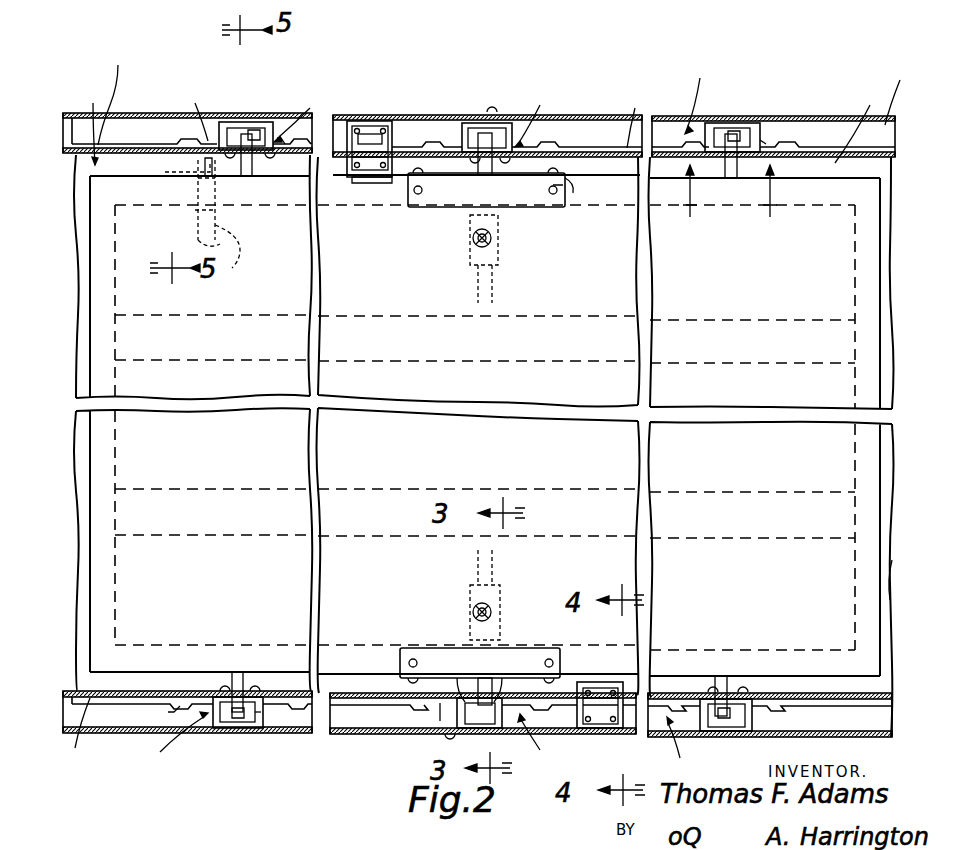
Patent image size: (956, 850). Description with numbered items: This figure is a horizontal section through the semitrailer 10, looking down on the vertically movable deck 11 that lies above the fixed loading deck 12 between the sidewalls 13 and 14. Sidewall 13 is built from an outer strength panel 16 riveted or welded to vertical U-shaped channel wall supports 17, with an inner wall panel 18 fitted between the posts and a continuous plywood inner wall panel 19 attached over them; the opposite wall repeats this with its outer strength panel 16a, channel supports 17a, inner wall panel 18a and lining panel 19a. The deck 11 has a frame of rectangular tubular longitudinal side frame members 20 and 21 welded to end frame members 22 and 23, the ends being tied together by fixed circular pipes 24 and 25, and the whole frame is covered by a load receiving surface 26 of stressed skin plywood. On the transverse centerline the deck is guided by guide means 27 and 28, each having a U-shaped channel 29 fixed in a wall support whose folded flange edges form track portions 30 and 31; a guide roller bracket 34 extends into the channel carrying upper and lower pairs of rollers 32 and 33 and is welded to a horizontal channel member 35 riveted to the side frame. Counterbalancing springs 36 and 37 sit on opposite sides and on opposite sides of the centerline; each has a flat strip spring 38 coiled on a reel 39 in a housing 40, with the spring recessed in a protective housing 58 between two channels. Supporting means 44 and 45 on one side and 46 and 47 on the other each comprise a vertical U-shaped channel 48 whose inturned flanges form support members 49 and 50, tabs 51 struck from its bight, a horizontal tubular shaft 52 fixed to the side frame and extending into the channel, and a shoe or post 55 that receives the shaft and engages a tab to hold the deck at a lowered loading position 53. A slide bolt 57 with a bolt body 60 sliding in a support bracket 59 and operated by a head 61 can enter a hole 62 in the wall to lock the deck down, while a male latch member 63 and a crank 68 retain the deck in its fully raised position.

The semitrailer 10 is at (126, 112).
The vertically movable deck 11 is at (86, 123).
The fixed loading deck 12 is at (779, 164).
The sidewall 13 is at (570, 120).
The sidewall 14 is at (112, 727).
The outer strength panel 16 is at (812, 118).
The outer strength panel 16a is at (375, 735).
The U-shaped channel wall support 17 is at (520, 101).
The U-shaped channel wall support 17a is at (418, 739).
The inner wall panel 18 is at (509, 92).
The inner wall panel 18a is at (73, 734).
The inner wall panel 19 is at (882, 180).
The inner wall panel 19a is at (128, 687).
The longitudinal side frame member 20 is at (291, 210).
The longitudinal side frame member 21 is at (362, 638).
The end frame member 22 is at (118, 372).
The end frame member 23 is at (853, 247).
The longitudinal pipe 24 is at (692, 320).
The longitudinal pipe 25 is at (785, 492).
The load receiving surface 26 is at (913, 563).
The guide means 27 is at (432, 198).
The guide means 28 is at (407, 648).
The U-shaped channel 29 is at (448, 722).
The track portion 30 is at (462, 680).
The track portion 31 is at (495, 702).
The roller 32 is at (440, 712).
The roller 33 is at (516, 683).
The guide roller bracket 34 is at (482, 680).
The horizontal channel member 35 is at (550, 665).
The counterbalancing spring 36 is at (378, 188).
The counterbalancing spring 37 is at (645, 685).
The flat strip spring 38 is at (621, 728).
The reel 39 is at (605, 725).
The housing 40 is at (624, 682).
The supporting means 44 is at (260, 163).
The supporting means 45 is at (722, 168).
The supporting means 46 is at (240, 672).
The supporting means 47 is at (725, 682).
The vertical U-shaped channel 48 is at (732, 728).
The support member 49 is at (230, 672).
The support member 50 is at (252, 688).
The tab 51 is at (743, 128).
The horizontal tubular shaft 52 is at (740, 710).
The lowered loading position 53 is at (475, 610).
The shoe or post 55 is at (265, 717).
The slide bolt 57 is at (190, 226).
The protective housing 58 is at (573, 710).
The support bracket 59 is at (193, 190).
The bolt body 60 is at (195, 210).
The head 61 is at (235, 260).
The hole 62 is at (192, 109).
The male latch member 63 is at (473, 240).
The crank 68 is at (530, 563).